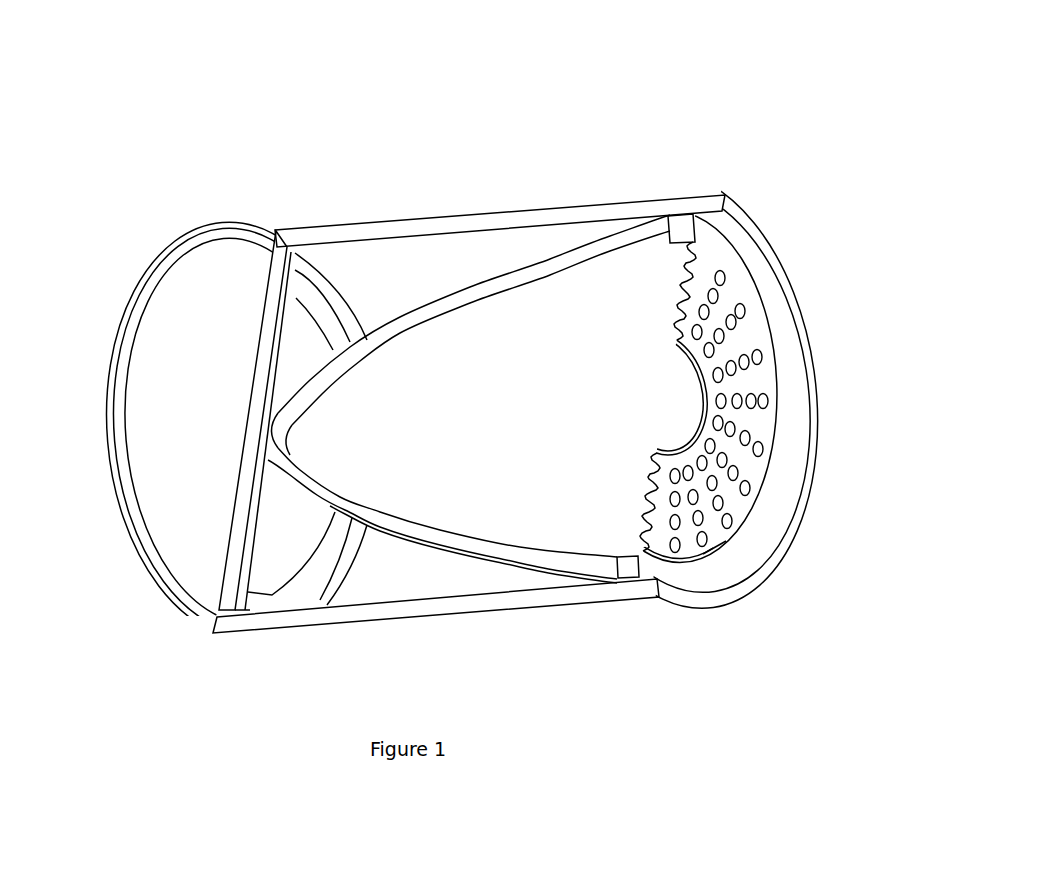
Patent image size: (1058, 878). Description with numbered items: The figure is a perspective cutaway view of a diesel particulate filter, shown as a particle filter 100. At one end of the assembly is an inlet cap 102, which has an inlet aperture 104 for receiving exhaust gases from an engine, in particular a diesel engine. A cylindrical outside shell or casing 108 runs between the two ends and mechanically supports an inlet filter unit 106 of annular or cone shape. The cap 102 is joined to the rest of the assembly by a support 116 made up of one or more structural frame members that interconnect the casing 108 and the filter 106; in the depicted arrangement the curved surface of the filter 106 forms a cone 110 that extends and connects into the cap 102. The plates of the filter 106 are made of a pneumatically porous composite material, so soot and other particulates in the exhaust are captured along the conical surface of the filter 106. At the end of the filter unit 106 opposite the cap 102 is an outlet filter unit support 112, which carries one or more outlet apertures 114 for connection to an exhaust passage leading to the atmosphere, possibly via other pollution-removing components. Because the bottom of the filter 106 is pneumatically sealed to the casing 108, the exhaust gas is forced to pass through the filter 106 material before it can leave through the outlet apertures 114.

The particle filter 100 is at (628, 138).
The inlet cap 102 is at (117, 507).
The inlet aperture 104 is at (167, 385).
The inlet filter unit 106 is at (536, 263).
The casing 108 is at (458, 204).
The cone 110 is at (270, 416).
The outlet filter unit support 112 is at (765, 382).
The outlet apertures 114 is at (677, 395).
The support 116 is at (237, 525).